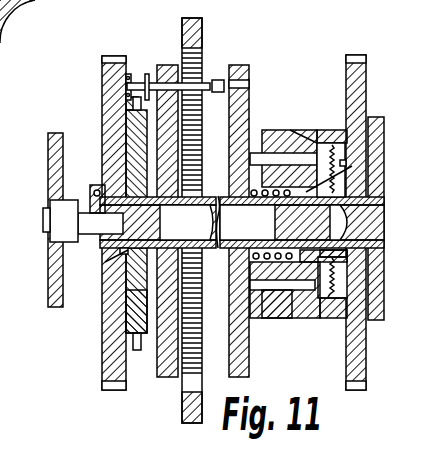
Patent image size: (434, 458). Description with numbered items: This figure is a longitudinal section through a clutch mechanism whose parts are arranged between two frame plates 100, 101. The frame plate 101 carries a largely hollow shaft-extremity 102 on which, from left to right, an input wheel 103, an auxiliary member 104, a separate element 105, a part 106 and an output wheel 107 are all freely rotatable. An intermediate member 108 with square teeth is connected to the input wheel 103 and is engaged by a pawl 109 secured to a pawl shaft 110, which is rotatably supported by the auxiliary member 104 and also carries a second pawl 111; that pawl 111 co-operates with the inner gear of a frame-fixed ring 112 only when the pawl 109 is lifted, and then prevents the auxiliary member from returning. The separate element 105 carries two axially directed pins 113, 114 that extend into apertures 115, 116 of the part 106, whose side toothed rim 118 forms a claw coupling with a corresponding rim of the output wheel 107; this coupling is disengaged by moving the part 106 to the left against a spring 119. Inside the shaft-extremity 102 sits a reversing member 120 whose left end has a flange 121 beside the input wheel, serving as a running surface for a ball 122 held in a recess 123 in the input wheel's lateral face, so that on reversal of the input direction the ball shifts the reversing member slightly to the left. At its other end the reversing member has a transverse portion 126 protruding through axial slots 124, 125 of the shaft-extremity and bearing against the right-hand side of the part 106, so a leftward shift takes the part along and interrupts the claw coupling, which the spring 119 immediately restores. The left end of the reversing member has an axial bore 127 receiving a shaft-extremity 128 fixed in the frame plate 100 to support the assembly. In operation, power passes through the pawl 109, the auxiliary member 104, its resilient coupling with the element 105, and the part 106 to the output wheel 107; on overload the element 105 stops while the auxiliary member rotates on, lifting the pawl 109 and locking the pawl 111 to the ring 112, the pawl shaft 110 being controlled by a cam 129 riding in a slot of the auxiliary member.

The frame plate 100 is at (50, 291).
The frame plate 101 is at (378, 281).
The shaft-extremity 102 is at (380, 222).
The input wheel 103 is at (112, 76).
The auxiliary member 104 is at (168, 65).
The separate element 105 is at (249, 73).
The part 106 is at (292, 132).
The output wheel 107 is at (366, 70).
The intermediate member 108 is at (142, 126).
The pawl 109 is at (128, 74).
The pawl shaft 110 is at (151, 83).
The pawl 111 is at (209, 84).
The ring 112 is at (202, 26).
The pin 113 is at (258, 157).
The pin 114 is at (262, 290).
The aperture 115 is at (334, 134).
The aperture 116 is at (300, 290).
The toothed rim 118 is at (332, 300).
The spring 119 is at (283, 322).
The reversing member 120 is at (126, 280).
The flange 121 is at (124, 252).
The ball 122 is at (94, 193).
The recess 123 is at (100, 190).
The axial slot 124 is at (352, 164).
The axial slot 125 is at (322, 254).
The transverse portion 126 is at (335, 183).
The axial bore 127 is at (118, 258).
The shaft-extremity 128 is at (90, 233).
The cam 129 is at (224, 84).